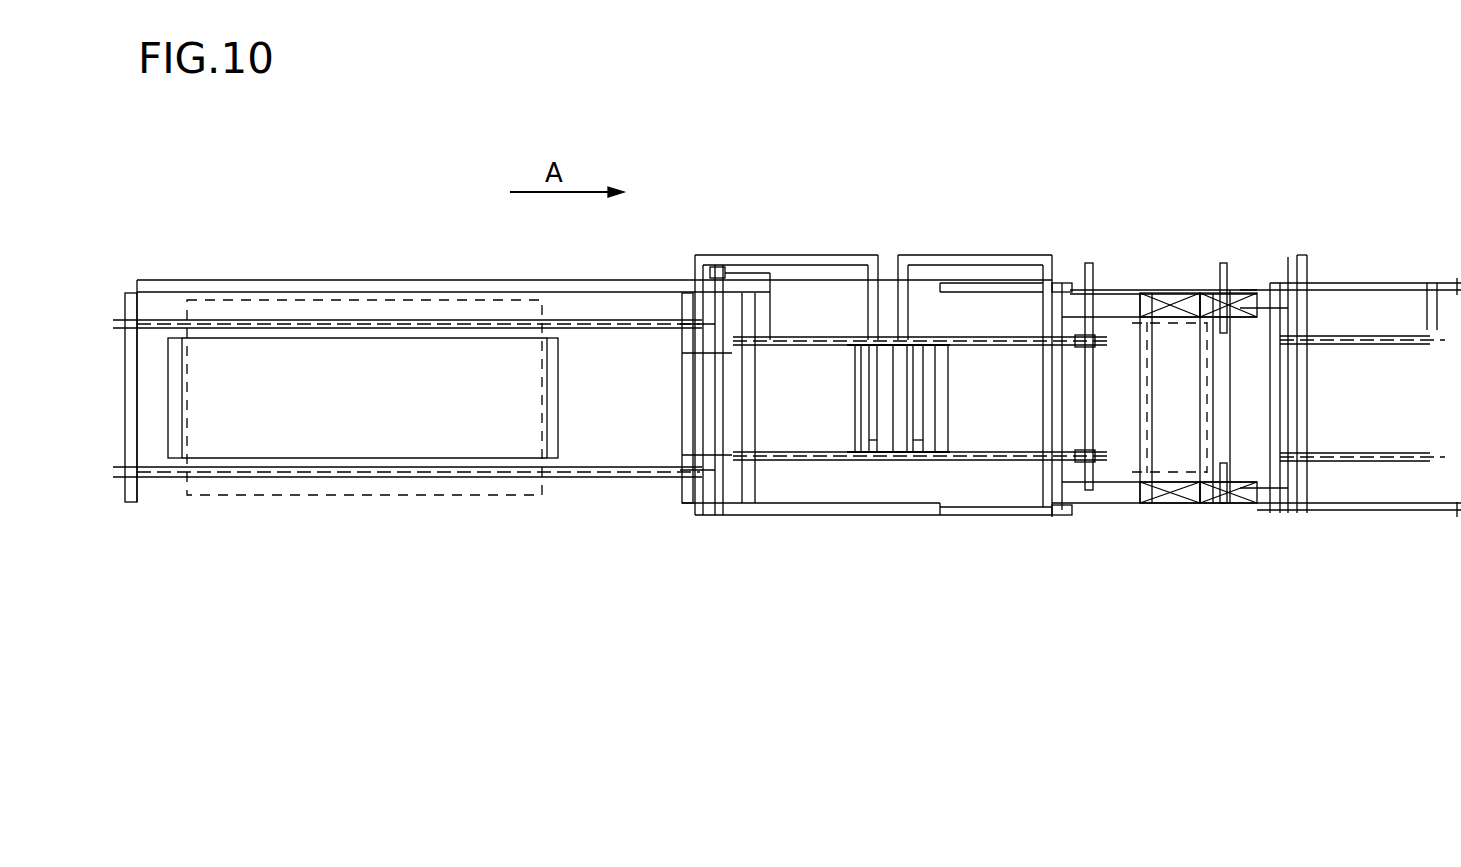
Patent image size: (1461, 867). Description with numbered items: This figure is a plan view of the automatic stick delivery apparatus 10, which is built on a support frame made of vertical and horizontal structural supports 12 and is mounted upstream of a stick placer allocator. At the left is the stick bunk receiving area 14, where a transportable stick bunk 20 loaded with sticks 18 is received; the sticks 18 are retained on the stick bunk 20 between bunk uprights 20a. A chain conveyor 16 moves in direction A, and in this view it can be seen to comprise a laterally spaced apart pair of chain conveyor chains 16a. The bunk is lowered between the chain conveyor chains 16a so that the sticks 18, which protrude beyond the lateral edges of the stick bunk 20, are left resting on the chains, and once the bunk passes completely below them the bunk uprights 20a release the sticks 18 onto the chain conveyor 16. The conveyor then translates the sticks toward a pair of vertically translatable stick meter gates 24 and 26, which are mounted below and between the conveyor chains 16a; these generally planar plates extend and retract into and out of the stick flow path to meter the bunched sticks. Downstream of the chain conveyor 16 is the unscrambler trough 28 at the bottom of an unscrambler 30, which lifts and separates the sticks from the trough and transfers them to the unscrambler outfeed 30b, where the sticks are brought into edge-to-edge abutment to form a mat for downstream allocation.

The apparatus 10 is at (913, 218).
The structural supports 12 is at (977, 255).
The stick bunk receiving area 14 is at (340, 257).
The chain conveyor 16 is at (773, 233).
The chain conveyor chains 16a is at (643, 320).
The sticks 18 is at (397, 508).
The stick bunk 20 is at (283, 447).
The bunk uprights 20a is at (182, 395).
The stick meter gate 24 is at (857, 397).
The stick meter gate 26 is at (907, 397).
The unscrambler trough 28 is at (1113, 317).
The unscrambler 30 is at (1258, 260).
The unscrambler outfeed 30b is at (1373, 340).